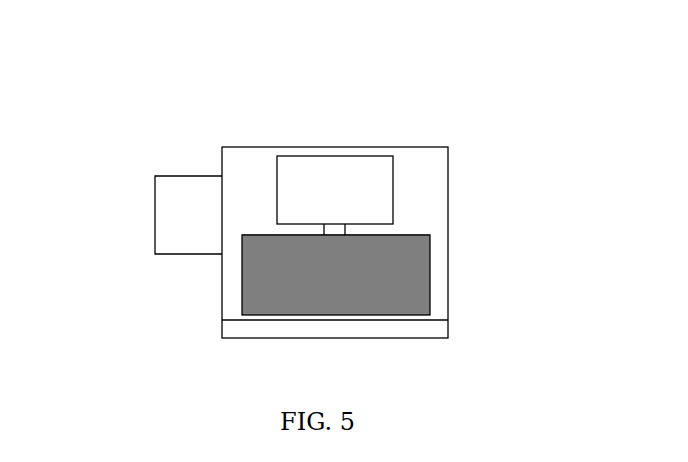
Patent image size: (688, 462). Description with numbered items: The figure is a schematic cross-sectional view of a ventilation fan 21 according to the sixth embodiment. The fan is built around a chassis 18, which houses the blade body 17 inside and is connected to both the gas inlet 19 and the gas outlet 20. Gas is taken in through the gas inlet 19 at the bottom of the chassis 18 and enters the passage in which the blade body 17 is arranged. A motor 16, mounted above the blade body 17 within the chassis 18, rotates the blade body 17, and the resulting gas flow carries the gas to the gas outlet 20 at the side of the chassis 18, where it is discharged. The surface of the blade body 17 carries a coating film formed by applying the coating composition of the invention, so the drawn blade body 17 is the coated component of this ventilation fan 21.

The ventilation fan 21 is at (161, 65).
The motor 16 is at (333, 170).
The blade body 17 is at (415, 275).
The chassis 18 is at (448, 187).
The gas inlet 19 is at (395, 335).
The gas outlet 20 is at (162, 199).